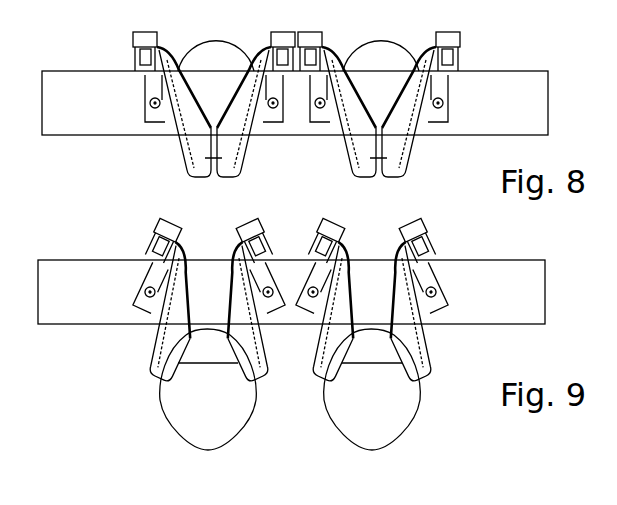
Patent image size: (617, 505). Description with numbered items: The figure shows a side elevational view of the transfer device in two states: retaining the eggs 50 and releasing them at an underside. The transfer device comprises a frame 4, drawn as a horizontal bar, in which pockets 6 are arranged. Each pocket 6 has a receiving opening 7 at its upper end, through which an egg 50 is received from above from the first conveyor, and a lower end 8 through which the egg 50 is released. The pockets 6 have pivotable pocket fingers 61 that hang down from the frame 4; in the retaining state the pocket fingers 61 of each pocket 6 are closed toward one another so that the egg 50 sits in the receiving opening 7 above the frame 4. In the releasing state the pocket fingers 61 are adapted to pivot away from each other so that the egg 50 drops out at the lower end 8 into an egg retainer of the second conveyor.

In FIG. 8, the frame 4 is at (530, 100).
In FIG. 9, the frame 4 is at (530, 283).
In FIG. 9, the pocket 6 is at (206, 327).
In FIG. 8, the receiving opening 7 is at (229, 30).
In FIG. 9, the receiving opening 7 is at (202, 238).
In FIG. 8, the lower end 8 is at (160, 0).
In FIG. 9, the lower end 8 is at (153, 390).
In FIG. 8, the egg 50 is at (232, 57).
In FIG. 9, the egg 50 is at (185, 408).
In FIG. 8, the pocket finger 61 is at (183, 152).
In FIG. 9, the pocket finger 61 is at (148, 363).